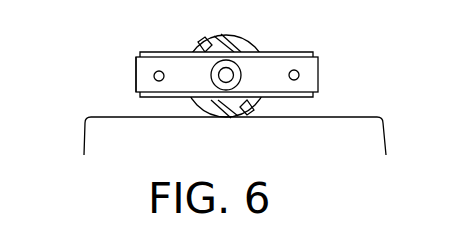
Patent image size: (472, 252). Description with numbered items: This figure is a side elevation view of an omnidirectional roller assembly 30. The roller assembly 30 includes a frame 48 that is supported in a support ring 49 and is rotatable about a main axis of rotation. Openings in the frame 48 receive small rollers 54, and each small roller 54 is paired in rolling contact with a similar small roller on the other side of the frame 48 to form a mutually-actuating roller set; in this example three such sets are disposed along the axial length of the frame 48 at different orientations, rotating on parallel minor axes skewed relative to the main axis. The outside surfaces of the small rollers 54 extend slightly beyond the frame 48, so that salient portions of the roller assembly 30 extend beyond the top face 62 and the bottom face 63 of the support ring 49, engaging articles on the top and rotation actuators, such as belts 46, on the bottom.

The roller assembly 30 is at (307, 70).
The belt 46 is at (111, 117).
The frame 48 is at (217, 38).
The support ring 49 is at (136, 66).
The small roller 54 is at (228, 60).
The top face 62 is at (306, 52).
The bottom face 63 is at (300, 97).